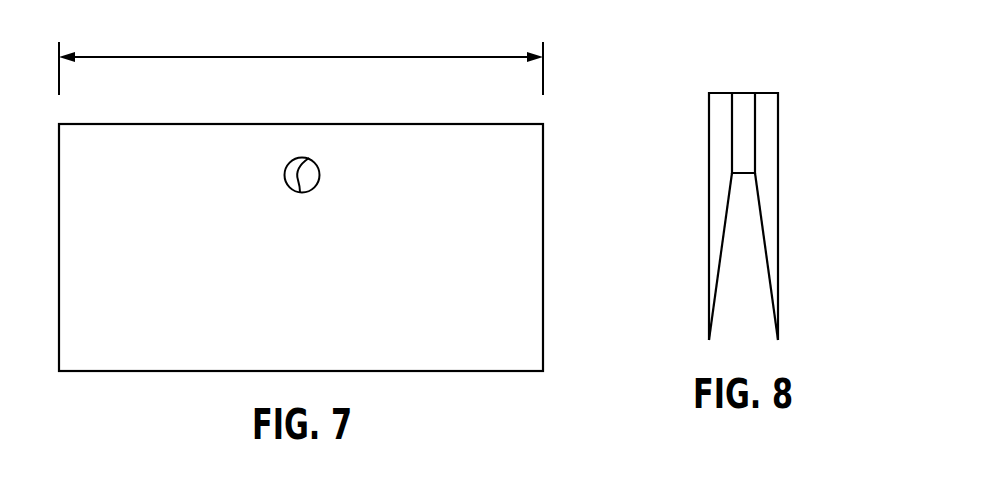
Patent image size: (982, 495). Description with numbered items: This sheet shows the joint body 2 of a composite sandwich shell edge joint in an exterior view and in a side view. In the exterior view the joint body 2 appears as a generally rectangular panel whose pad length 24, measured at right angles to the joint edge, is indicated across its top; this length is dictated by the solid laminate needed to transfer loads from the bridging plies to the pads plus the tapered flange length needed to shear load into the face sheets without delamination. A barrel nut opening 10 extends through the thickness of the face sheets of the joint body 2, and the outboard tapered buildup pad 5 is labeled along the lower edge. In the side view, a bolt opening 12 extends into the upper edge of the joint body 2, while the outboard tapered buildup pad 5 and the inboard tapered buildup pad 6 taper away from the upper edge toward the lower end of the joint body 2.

In FIG. 7, the joint body 2 is at (409, 124).
In FIG. 8, the joint body 2 is at (709, 128).
In FIG. 7, the pad length 24 is at (301, 56).
In FIG. 7, the barrel nut opening 10 is at (309, 158).
In FIG. 7, the outboard tapered buildup pad 5 is at (127, 350).
In FIG. 8, the outboard tapered buildup pad 5 is at (778, 258).
In FIG. 8, the bolt opening 12 is at (746, 106).
In FIG. 8, the inboard tapered buildup pad 6 is at (709, 258).